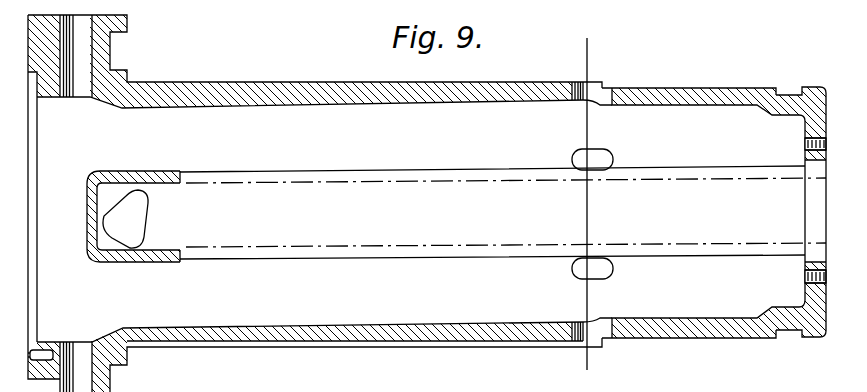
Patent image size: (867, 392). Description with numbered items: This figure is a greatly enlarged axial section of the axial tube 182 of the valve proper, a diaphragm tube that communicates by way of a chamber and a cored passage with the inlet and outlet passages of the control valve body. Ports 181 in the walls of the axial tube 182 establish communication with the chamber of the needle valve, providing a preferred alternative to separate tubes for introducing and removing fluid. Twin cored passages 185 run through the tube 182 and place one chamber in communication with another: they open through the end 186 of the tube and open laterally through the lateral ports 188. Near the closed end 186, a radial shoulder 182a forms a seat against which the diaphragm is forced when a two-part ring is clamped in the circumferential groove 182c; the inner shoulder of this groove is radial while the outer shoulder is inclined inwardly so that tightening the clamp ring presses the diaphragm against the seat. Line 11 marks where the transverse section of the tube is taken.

The ports 181 is at (580, 149).
The axial tube 182 is at (311, 60).
The radial shoulder 182a is at (603, 84).
The circumferential groove 182c is at (788, 92).
The twin cored passages 185 is at (380, 176).
The end of the tube 186 is at (806, 289).
The lateral ports 188 is at (135, 193).
The section line 11— 11 is at (584, 202).